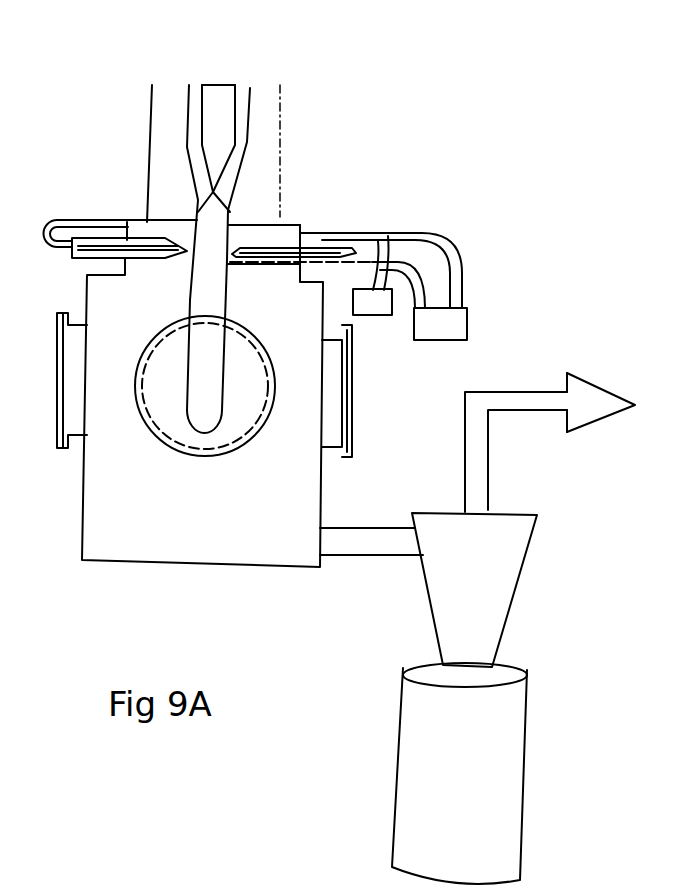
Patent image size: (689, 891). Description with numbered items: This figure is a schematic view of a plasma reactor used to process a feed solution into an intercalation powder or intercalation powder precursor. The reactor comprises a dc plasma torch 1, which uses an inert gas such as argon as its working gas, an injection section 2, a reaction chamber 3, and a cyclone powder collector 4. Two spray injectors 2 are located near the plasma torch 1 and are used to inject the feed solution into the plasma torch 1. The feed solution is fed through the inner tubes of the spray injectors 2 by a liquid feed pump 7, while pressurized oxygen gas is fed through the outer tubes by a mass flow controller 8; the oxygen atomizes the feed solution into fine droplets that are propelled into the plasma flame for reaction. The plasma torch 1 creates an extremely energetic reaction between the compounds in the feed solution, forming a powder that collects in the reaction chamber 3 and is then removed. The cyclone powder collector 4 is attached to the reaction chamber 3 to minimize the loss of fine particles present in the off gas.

The dc plasma torch 1 is at (237, 123).
The spray injector 2 is at (137, 240).
The reaction chamber 3 is at (172, 405).
The cyclone powder collector 4 is at (508, 608).
The liquid feed pump 7 is at (372, 315).
The mass flow controller 8 is at (467, 325).